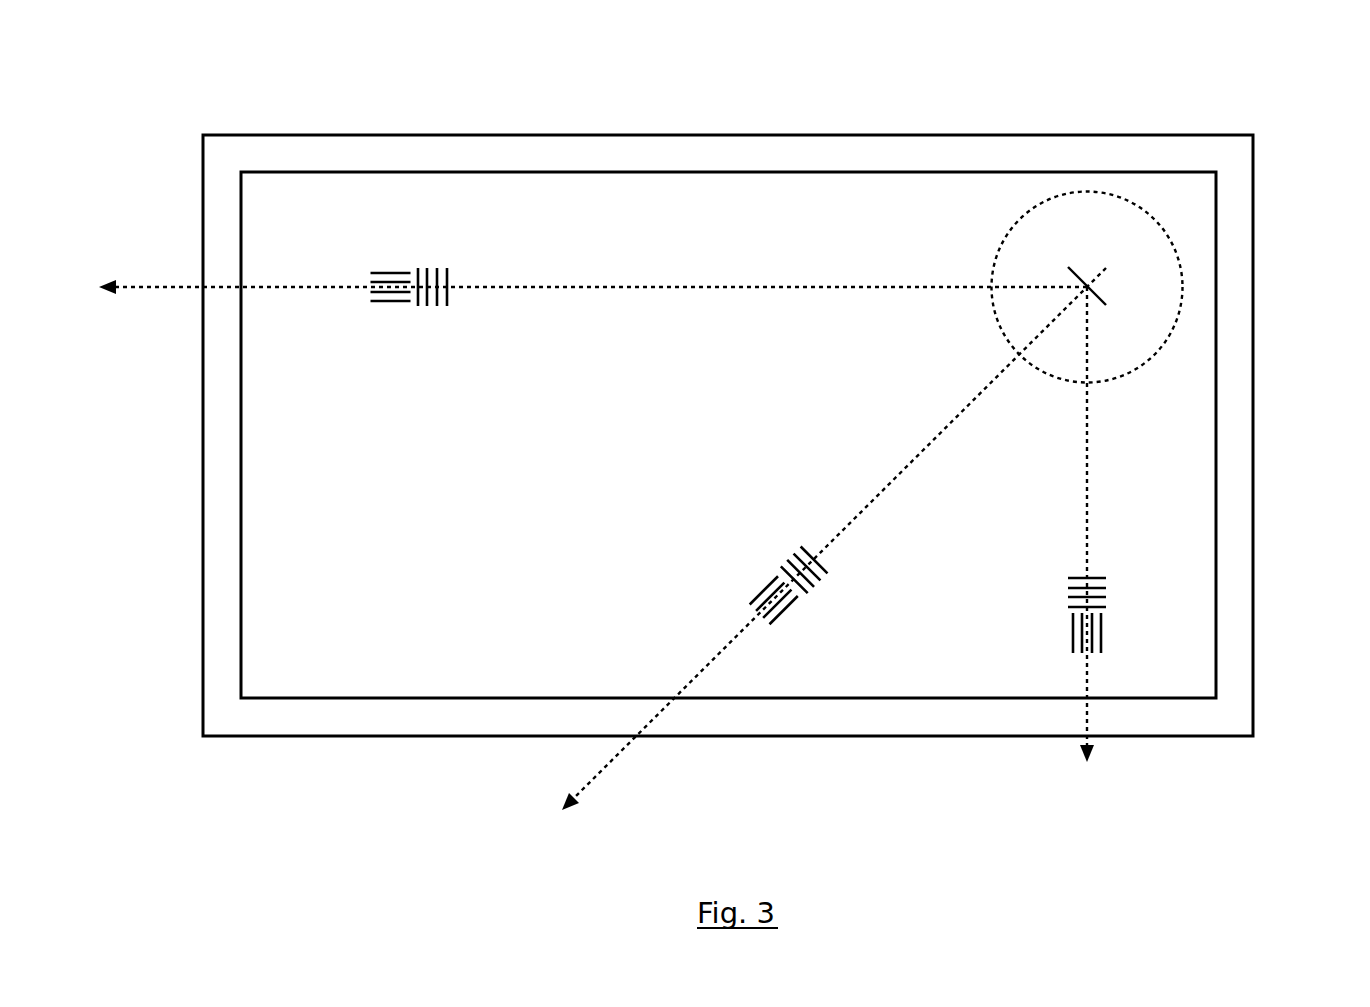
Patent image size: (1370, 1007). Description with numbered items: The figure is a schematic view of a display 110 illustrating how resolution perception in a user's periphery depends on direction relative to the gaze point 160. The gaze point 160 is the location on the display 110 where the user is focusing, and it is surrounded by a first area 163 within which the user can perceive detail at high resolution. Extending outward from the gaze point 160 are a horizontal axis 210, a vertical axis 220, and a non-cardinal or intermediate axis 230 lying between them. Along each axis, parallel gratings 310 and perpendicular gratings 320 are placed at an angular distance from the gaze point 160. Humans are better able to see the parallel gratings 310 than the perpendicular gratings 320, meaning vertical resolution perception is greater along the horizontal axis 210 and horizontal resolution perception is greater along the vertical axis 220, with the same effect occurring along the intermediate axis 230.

The display 110 is at (1145, 135).
The gaze point 160 is at (1100, 276).
The first area 163 is at (1178, 315).
The horizontal axis 210 is at (830, 285).
The vertical axis 220 is at (1087, 502).
The non-cardinal/intermediate axis 230 is at (752, 620).
The parallel gratings 310 is at (392, 271).
The perpendicular gratings 320 is at (447, 277).